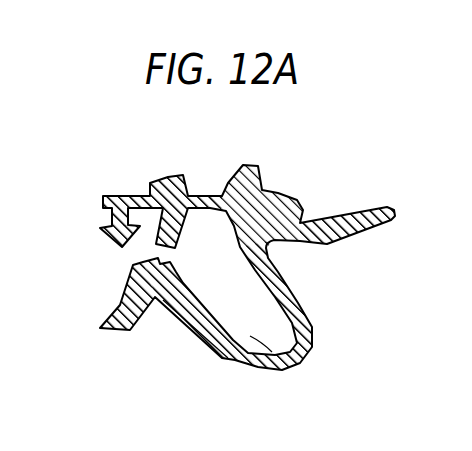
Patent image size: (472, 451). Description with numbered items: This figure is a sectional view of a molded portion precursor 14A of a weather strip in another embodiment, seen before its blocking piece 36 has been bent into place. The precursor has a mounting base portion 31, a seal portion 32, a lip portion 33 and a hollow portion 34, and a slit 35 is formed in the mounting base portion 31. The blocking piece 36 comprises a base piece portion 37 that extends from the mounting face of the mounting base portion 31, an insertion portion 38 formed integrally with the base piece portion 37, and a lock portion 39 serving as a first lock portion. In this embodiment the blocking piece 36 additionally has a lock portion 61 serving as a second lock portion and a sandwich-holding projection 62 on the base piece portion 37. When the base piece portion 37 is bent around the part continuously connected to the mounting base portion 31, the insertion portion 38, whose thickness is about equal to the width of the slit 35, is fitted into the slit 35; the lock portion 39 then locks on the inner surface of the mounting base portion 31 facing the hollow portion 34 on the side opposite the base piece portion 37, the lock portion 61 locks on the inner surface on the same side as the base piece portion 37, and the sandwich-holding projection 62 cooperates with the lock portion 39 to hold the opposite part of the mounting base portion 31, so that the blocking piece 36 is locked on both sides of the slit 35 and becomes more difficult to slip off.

The molded portion precursor 14A is at (293, 180).
The blocking piece 36 is at (131, 203).
The base piece portion 37 is at (134, 195).
The sandwich-holding projection 62 is at (102, 200).
The insertion portion 38 is at (112, 217).
The lock portion 39 is at (112, 232).
The lock portion 61 is at (128, 247).
The mounting base portion 31 is at (120, 297).
The slit 35 is at (172, 262).
The hollow portion 34 is at (243, 328).
The seal portion 32 is at (284, 371).
The lip portion 33 is at (368, 207).